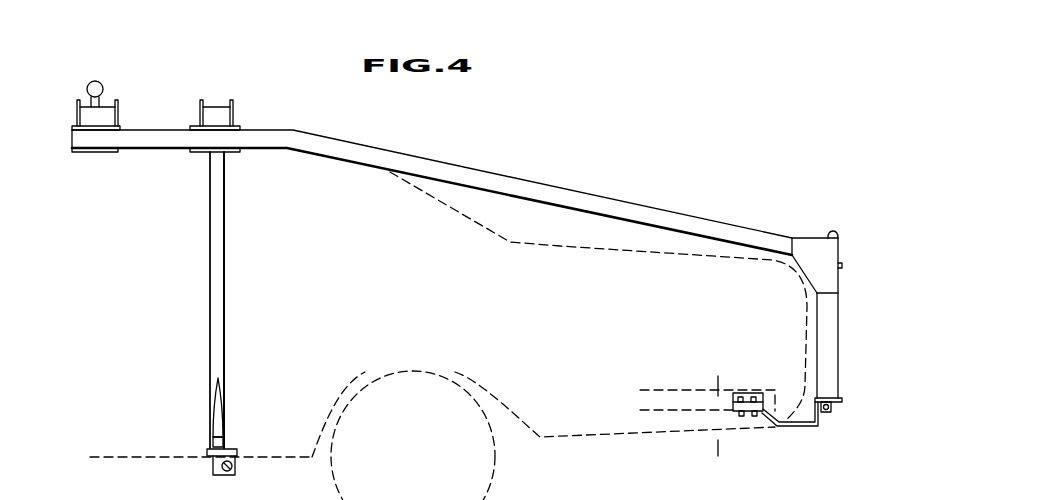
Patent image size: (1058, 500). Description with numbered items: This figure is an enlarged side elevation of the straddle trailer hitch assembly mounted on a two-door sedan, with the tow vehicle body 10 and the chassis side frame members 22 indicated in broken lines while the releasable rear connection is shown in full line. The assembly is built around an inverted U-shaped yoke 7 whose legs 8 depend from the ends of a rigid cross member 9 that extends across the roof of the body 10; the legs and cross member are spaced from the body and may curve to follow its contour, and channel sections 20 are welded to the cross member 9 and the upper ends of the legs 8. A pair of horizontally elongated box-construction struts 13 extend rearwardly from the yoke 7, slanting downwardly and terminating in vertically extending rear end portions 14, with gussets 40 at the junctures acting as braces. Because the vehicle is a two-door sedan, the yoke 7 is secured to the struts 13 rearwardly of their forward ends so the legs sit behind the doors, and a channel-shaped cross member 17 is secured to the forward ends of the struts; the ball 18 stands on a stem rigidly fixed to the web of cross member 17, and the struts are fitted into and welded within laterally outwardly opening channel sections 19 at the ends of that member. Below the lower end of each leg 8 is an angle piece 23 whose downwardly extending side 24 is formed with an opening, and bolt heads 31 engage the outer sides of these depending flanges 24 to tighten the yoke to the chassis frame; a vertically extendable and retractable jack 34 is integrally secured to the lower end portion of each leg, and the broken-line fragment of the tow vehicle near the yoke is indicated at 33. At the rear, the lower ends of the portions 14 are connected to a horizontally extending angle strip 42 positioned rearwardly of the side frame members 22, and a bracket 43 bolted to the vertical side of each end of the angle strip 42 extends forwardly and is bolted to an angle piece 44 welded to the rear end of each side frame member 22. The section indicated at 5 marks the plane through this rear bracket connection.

The section line 5- 5 is at (717, 383).
The inverted U-shaped yoke 7 is at (226, 248).
The legs 8 is at (212, 263).
The cross member 9 is at (236, 112).
The body 10 is at (528, 242).
The struts 13 is at (462, 162).
The rear end portions 14 is at (828, 316).
The cross member 17 is at (115, 120).
The ball 18 is at (95, 80).
The channel sections 19 is at (107, 153).
The channel sections 20 is at (231, 153).
The side frame members 22 is at (728, 391).
The angle piece 23 is at (206, 451).
The depending flange 24 is at (216, 464).
The bolt heads 31 is at (231, 463).
The wheel 33 is at (501, 435).
The jack 34 is at (220, 418).
The gussets 40 is at (801, 266).
The angle strip 42 is at (833, 411).
The bracket 43 is at (795, 427).
The angle piece 44 is at (753, 398).